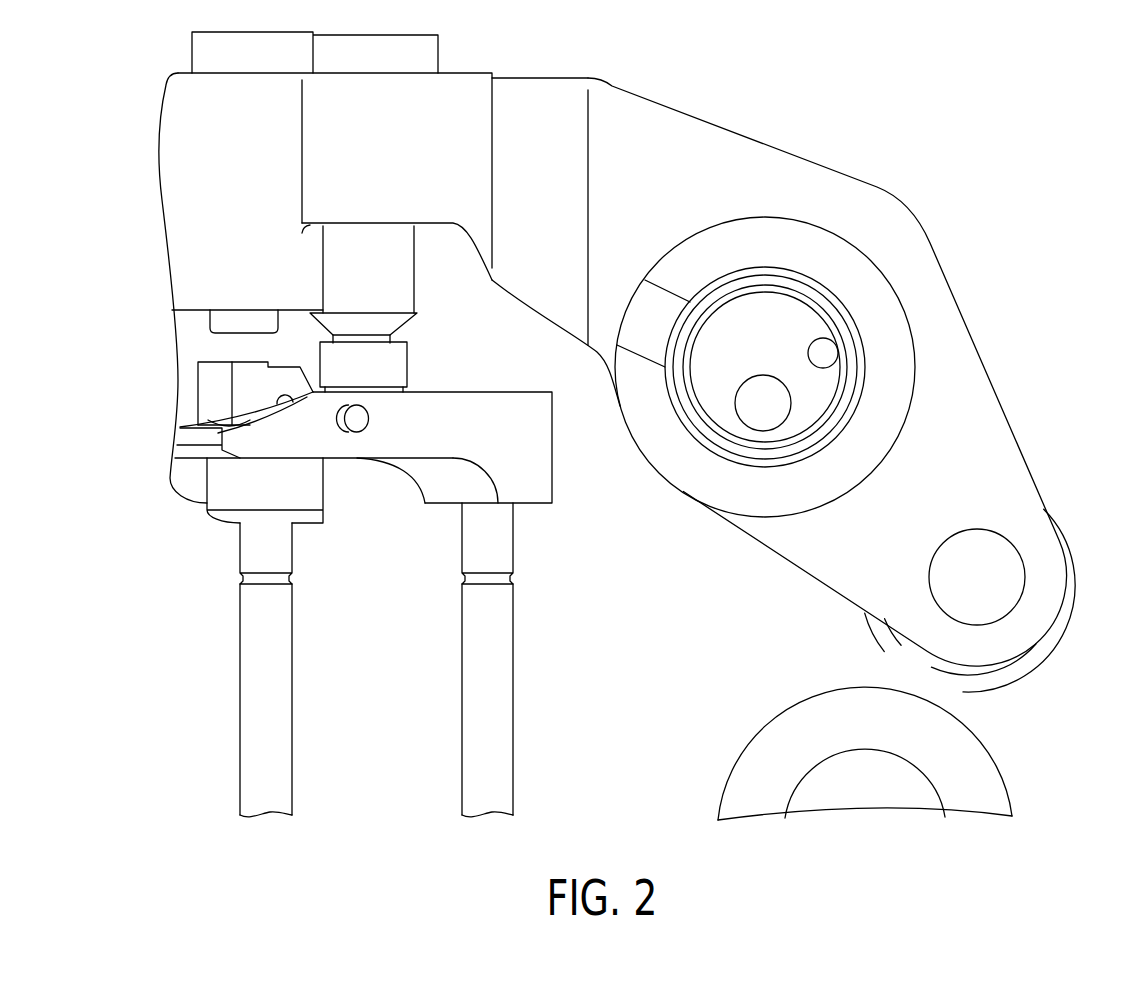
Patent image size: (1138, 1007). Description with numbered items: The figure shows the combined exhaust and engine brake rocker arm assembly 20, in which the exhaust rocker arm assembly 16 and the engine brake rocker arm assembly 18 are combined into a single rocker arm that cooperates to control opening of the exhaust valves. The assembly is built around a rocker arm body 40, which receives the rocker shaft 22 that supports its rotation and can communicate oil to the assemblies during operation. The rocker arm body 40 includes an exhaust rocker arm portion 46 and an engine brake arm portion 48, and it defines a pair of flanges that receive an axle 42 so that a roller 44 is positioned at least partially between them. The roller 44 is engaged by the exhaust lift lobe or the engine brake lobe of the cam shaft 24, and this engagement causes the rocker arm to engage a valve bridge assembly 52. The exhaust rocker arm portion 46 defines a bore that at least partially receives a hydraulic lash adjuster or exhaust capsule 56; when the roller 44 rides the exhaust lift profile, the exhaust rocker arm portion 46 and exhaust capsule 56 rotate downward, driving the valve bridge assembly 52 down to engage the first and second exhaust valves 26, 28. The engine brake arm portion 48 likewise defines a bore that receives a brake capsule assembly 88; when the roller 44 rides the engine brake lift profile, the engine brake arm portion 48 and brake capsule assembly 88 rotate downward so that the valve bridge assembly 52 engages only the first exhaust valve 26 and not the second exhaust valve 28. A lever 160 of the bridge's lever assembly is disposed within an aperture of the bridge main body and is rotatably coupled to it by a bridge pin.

The exhaust rocker arm assembly 16 is at (465, 102).
The engine brake rocker arm assembly 18 is at (157, 308).
The combined exhaust and engine brake rocker arm assembly 20 is at (1003, 152).
The rocker shaft 22 is at (785, 301).
The cam shaft 24 is at (862, 800).
The first exhaust valve 26 is at (250, 668).
The second exhaust valve 28 is at (468, 668).
The rocker arm body 40 is at (628, 117).
The axle 42 is at (977, 540).
The roller 44 is at (1068, 543).
The exhaust rocker arm portion 46 is at (415, 212).
The engine brake arm portion 48 is at (177, 192).
The valve bridge assembly 52 is at (358, 441).
The exhaust capsule 56 is at (405, 297).
The brake capsule assembly 88 is at (208, 320).
The lever 160 is at (240, 395).